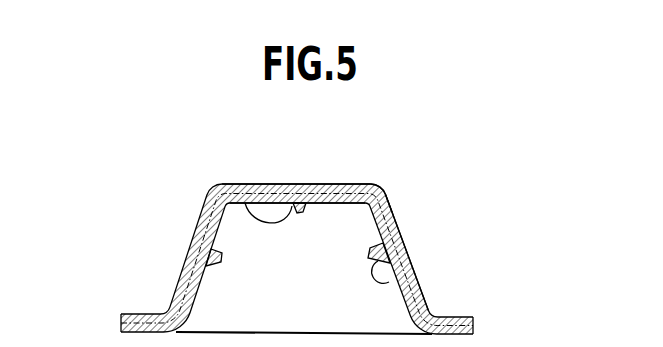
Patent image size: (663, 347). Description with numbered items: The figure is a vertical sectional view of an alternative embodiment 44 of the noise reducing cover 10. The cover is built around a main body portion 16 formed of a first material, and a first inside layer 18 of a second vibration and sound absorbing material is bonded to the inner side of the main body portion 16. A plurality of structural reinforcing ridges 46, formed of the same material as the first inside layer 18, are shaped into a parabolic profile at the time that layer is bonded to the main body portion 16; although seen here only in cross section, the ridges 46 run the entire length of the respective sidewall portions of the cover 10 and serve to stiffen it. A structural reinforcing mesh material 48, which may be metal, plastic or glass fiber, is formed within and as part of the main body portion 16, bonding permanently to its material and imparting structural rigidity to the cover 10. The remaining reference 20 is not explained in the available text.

The noise reducing cover 10 is at (186, 234).
The main body portion 16 is at (382, 208).
The first inside layer 18 is at (328, 205).
The top wall 20 is at (320, 185).
The alternative embodiment 44 is at (405, 221).
The structural reinforcing ridges 46 is at (245, 190).
The structural reinforcing mesh material 48 is at (257, 193).